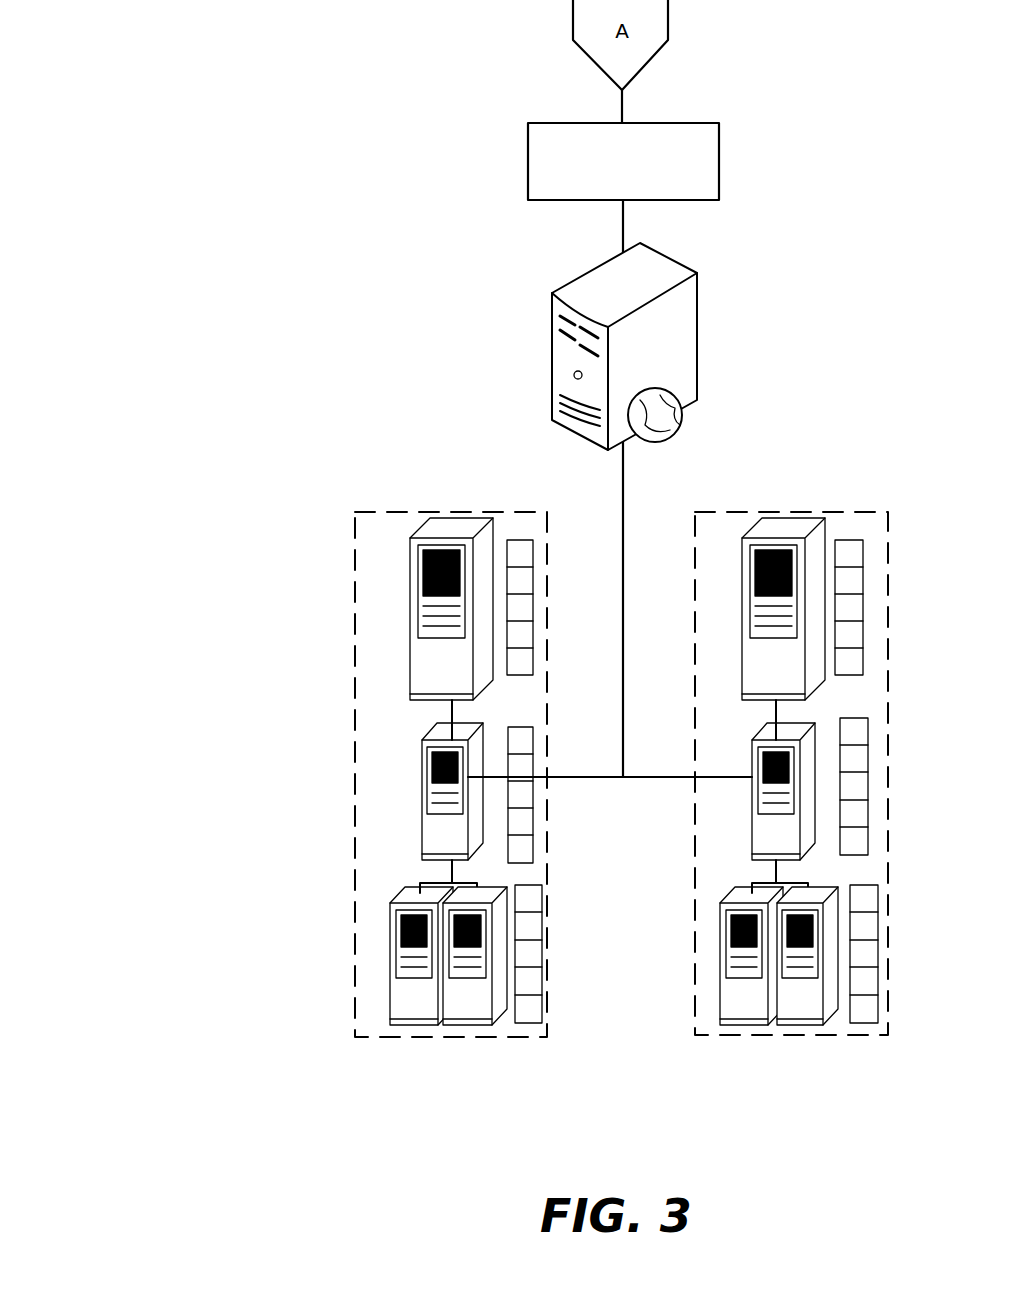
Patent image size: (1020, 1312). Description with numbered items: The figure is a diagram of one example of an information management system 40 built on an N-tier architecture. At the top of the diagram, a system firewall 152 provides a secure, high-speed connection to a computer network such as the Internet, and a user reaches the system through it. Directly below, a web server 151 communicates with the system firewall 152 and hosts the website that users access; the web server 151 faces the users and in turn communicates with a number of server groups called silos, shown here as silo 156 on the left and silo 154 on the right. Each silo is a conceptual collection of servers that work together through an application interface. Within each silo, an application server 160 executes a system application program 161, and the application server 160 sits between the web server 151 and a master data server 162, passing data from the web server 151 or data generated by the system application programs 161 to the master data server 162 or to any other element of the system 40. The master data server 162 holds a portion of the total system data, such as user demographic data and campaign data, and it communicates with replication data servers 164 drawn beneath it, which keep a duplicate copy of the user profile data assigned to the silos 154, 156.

The system 40 is at (163, 342).
The system firewall 152 is at (528, 163).
The web server 151 is at (550, 300).
The silo 156 is at (357, 1032).
The silo 154 is at (697, 1027).
The application server 160 is at (412, 545).
The system application program 161 is at (527, 601).
The master data server 162 is at (423, 775).
The replication data servers 164 is at (393, 930).